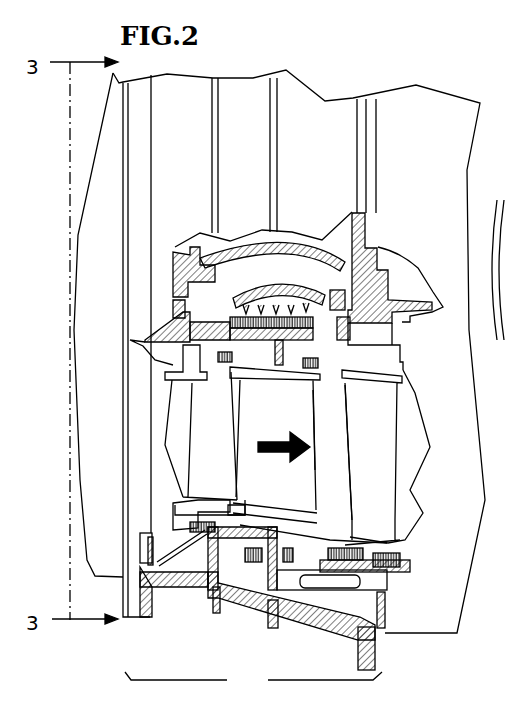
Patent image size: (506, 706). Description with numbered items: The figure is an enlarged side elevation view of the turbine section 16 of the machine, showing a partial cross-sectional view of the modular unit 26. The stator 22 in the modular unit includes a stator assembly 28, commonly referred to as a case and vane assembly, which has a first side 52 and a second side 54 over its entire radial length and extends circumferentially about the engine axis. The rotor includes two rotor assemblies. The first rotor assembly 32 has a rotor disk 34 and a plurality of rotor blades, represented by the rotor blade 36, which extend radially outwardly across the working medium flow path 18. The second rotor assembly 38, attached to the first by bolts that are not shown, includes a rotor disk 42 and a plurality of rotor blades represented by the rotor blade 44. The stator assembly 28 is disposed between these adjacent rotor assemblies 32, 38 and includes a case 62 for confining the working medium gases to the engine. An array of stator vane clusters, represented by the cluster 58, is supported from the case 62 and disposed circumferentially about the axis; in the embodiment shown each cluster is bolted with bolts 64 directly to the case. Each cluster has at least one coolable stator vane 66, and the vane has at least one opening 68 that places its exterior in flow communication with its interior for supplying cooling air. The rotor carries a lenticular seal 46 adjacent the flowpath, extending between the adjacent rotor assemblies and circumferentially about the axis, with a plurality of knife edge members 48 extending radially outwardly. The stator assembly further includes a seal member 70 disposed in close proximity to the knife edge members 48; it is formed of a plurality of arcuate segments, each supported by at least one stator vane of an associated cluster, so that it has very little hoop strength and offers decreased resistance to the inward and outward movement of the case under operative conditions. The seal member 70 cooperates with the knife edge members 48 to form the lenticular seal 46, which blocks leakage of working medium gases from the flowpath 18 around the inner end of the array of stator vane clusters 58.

The turbine section 16 is at (341, 94).
The working medium flow path 18 is at (283, 437).
The stator 22 is at (390, 664).
The modular unit 26 is at (253, 682).
The stator assembly 28 is at (328, 470).
The first rotor assembly 32 is at (200, 305).
The rotor disk 34 is at (178, 252).
The rotor blade 36 is at (185, 388).
The second rotor assembly 38 is at (400, 287).
The rotor disk 42 is at (368, 270).
The rotor blade 44 is at (390, 405).
The lenticular seal 46 is at (283, 237).
The knife edge members 48 is at (308, 294).
The first side 52 is at (230, 332).
The second side 54 is at (318, 312).
The stator vane cluster 58 is at (325, 440).
The case 62 is at (252, 598).
The bolts 64 is at (247, 554).
The coolable stator vane 66 is at (291, 401).
The opening 68 is at (281, 521).
The seal member 70 is at (290, 301).